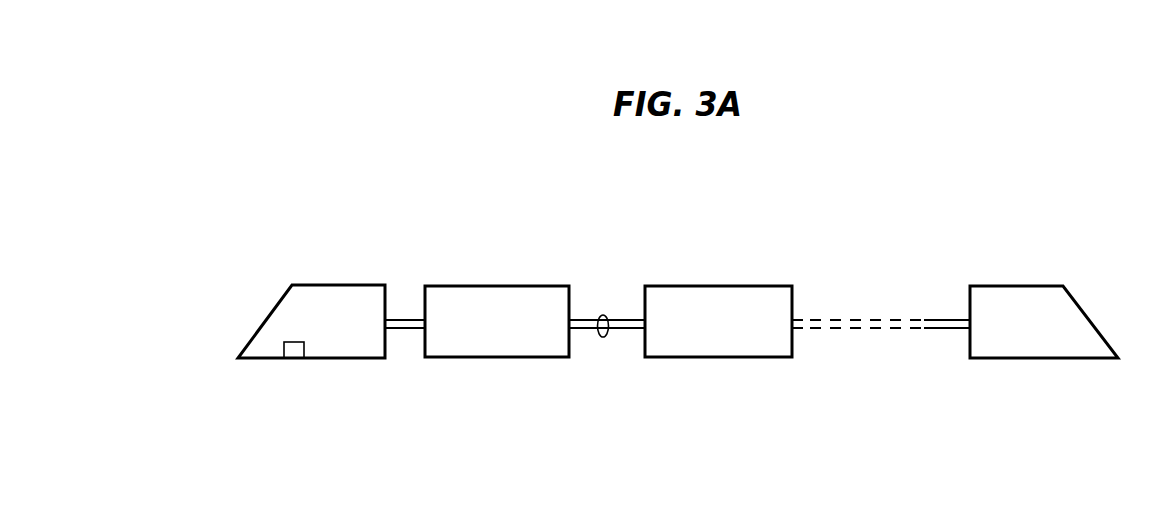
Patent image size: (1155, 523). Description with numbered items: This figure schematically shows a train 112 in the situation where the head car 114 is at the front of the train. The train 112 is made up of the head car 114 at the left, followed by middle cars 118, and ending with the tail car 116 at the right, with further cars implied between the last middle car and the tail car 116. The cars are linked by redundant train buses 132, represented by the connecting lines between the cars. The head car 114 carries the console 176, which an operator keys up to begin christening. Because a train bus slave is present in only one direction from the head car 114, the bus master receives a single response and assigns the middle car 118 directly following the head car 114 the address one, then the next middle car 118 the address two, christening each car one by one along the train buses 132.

The train 112 is at (446, 195).
The head car 114 is at (323, 285).
The tail car 116 is at (1008, 286).
The middle car 118 is at (478, 286).
The redundant train buses 132 is at (603, 315).
The console 176 is at (292, 358).